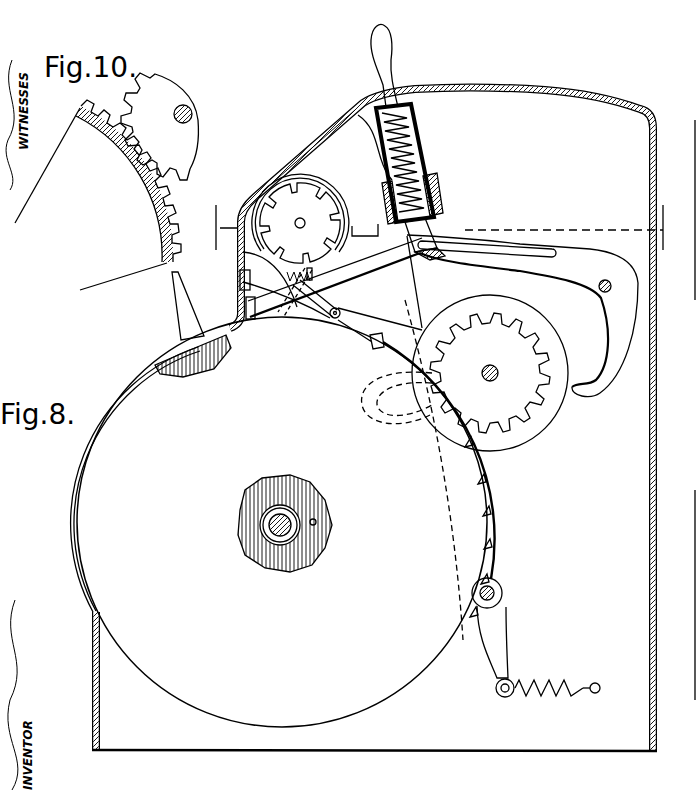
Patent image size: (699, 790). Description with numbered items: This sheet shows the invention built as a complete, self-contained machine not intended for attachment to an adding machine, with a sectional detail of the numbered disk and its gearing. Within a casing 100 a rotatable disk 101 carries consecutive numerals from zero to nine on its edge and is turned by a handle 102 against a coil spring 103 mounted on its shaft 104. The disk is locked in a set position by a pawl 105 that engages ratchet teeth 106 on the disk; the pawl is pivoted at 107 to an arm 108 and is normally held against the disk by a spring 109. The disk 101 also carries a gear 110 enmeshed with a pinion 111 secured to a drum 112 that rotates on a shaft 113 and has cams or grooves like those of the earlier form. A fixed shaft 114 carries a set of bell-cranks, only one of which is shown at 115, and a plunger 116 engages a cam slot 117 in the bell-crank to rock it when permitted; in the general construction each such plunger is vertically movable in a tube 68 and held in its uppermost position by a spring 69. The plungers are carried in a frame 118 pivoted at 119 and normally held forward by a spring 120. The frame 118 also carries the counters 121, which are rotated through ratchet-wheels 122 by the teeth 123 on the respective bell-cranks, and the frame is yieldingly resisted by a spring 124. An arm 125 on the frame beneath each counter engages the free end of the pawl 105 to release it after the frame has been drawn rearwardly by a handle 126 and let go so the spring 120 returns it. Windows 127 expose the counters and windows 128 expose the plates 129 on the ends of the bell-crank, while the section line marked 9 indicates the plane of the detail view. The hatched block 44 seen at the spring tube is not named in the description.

In FIG. 8, the section line 9 is at (439, 227).
In FIG. 8, the plunger block 44 is at (430, 197).
In FIG. 8, the tube 68 is at (412, 125).
In FIG. 8, the spring 69 is at (414, 150).
In FIG. 8, the casing 100 is at (648, 468).
In FIG. 10, the rotatable disk 101 is at (91, 199).
In FIG. 8, the rotatable disk 101 is at (282, 522).
In FIG. 8, the handle 102 is at (175, 292).
In FIG. 8, the coil spring 103 is at (300, 552).
In FIG. 8, the shaft 104 is at (258, 532).
In FIG. 8, the pawl 105 is at (372, 340).
In FIG. 8, the ratchet teeth 106 is at (488, 490).
In FIG. 8, the pivot 107 is at (342, 315).
In FIG. 8, the arm 108 is at (252, 280).
In FIG. 8, the spring 109 is at (298, 322).
In FIG. 10, the gear 110 is at (172, 200).
In FIG. 10, the pinion 111 is at (196, 145).
In FIG. 8, the pinion 111 is at (527, 410).
In FIG. 8, the drum 112 is at (540, 333).
In FIG. 10, the shaft 113 is at (192, 110).
In FIG. 8, the shaft 113 is at (494, 374).
In FIG. 8, the fixed shaft 114 is at (608, 280).
In FIG. 8, the bell-crank 115 is at (567, 250).
In FIG. 8, the plunger 116 is at (440, 240).
In FIG. 8, the cam slot 117 is at (497, 250).
In FIG. 8, the frame 118 is at (492, 548).
In FIG. 8, the pivot 119 is at (495, 592).
In FIG. 8, the spring 120 is at (553, 680).
In FIG. 8, the counter 121 is at (318, 178).
In FIG. 8, the ratchet-wheel 122 is at (320, 205).
In FIG. 8, the tooth 123 is at (340, 268).
In FIG. 8, the spring 124 is at (355, 130).
In FIG. 8, the arm 125 is at (368, 232).
In FIG. 8, the handle 126 is at (392, 80).
In FIG. 8, the window 127 is at (290, 185).
In FIG. 8, the window 128 is at (240, 282).
In FIG. 8, the plate 129 is at (254, 322).